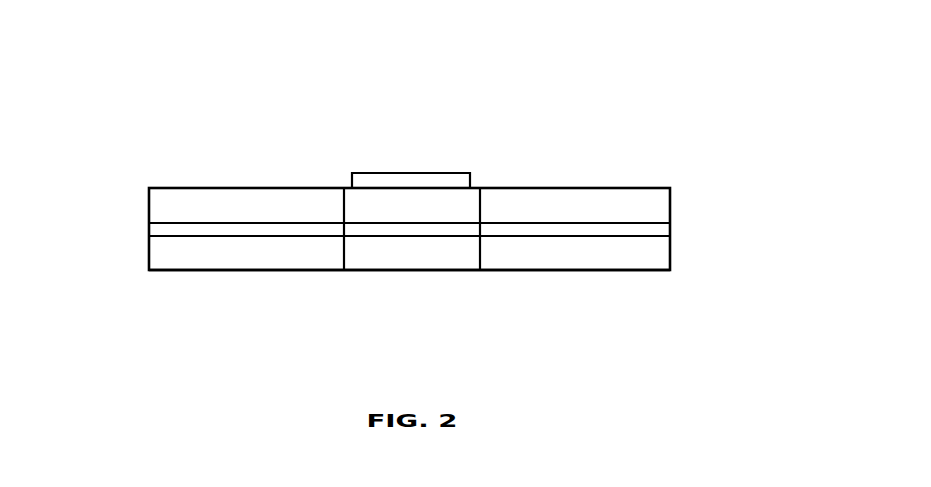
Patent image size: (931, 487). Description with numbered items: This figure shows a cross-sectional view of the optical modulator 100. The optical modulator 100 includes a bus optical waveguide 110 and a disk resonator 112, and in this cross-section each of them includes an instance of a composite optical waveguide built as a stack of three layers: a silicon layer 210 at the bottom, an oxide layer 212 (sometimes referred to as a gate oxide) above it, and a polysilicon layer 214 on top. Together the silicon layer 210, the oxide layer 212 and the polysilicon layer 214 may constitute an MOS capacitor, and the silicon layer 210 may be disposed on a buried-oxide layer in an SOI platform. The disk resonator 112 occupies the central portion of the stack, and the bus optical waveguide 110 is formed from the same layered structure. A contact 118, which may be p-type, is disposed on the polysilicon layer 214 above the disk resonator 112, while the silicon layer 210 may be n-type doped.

The optical modulator 100 is at (240, 70).
The bus optical waveguide 110 is at (680, 270).
The disk resonator 112 is at (343, 280).
The contact 118 is at (425, 180).
The silicon layer 210 is at (463, 252).
The oxide layer 212 is at (225, 230).
The polysilicon layer 214 is at (450, 202).